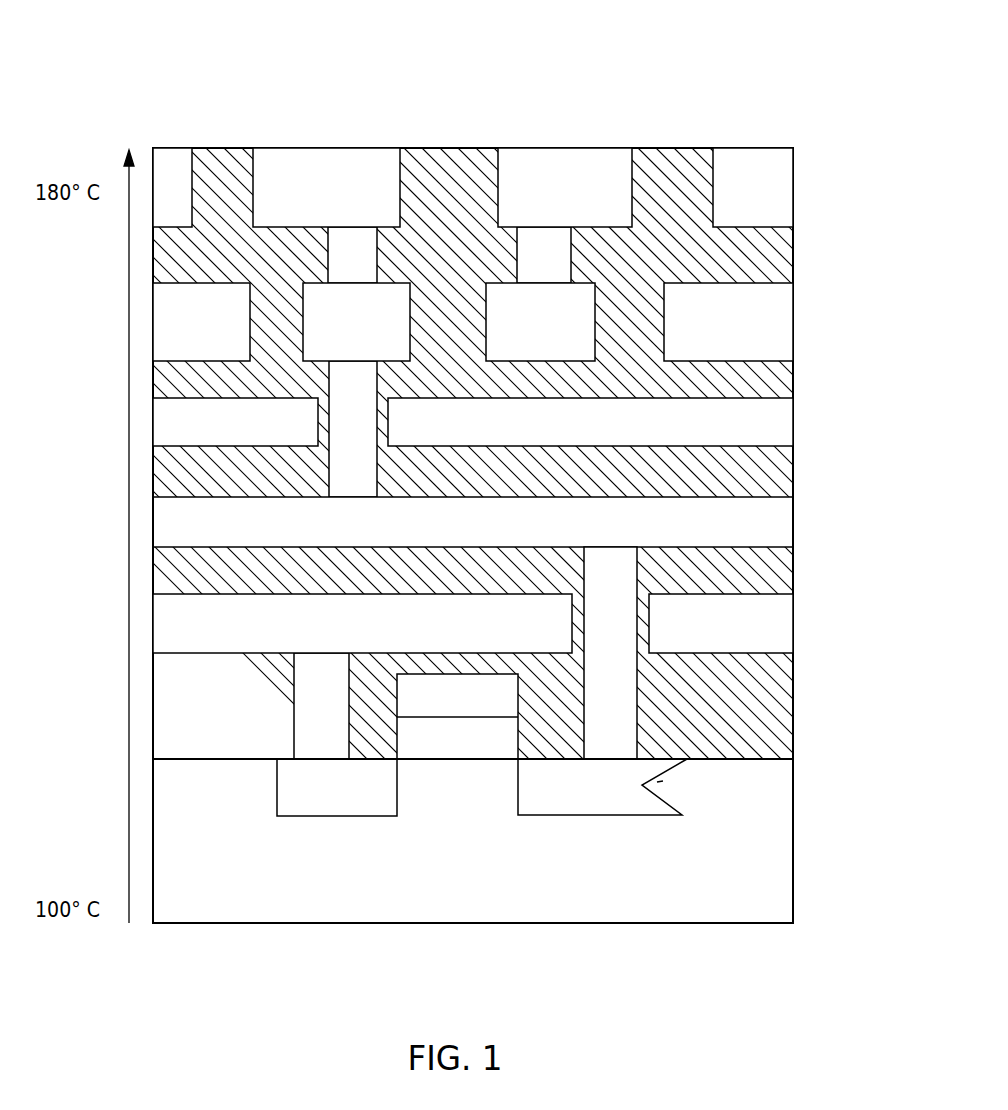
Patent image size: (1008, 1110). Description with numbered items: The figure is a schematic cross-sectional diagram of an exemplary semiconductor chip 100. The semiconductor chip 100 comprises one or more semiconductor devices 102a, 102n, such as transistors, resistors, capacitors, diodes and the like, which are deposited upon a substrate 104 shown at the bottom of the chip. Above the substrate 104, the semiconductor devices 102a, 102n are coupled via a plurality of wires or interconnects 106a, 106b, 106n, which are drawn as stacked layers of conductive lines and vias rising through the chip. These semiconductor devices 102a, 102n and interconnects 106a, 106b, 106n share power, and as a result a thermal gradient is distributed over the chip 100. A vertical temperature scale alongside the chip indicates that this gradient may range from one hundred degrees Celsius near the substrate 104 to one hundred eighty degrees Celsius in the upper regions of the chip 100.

The semiconductor chip 100 is at (212, 83).
The semiconductor device 102a is at (277, 800).
The semiconductor device 102n is at (518, 800).
The substrate 104 is at (392, 902).
The interconnect 106a is at (747, 202).
The interconnect 106b is at (747, 327).
The interconnect 106n is at (748, 634).